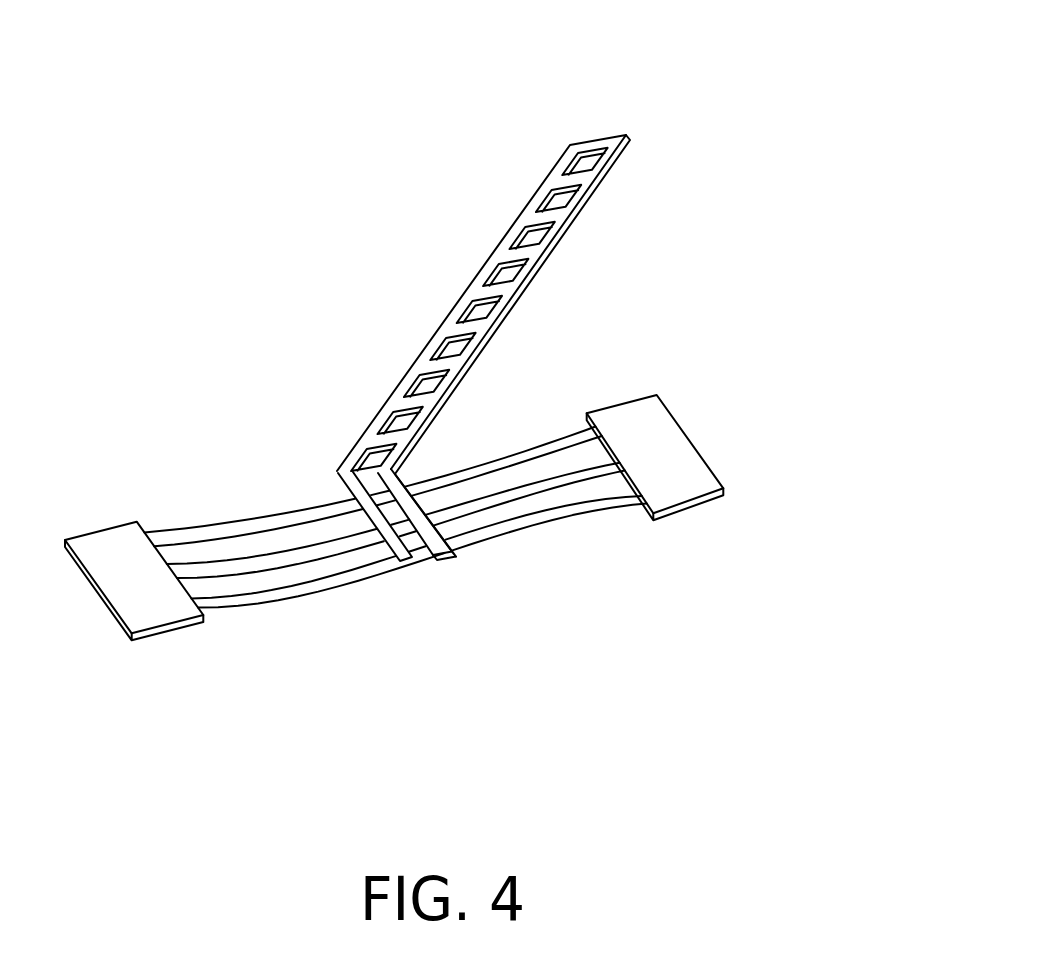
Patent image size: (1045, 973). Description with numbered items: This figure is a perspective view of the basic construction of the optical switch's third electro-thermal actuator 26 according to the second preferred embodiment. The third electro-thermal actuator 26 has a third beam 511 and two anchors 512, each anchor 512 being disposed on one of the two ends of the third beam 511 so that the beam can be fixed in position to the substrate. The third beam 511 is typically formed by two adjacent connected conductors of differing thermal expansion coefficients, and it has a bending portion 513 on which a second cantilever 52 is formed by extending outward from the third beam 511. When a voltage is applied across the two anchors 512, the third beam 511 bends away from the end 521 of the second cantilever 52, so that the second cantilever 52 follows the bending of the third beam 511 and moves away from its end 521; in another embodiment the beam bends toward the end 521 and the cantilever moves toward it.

The third electro-thermal actuator 26 is at (797, 190).
The second cantilever 52 is at (473, 293).
The end of the second cantilever 521 is at (597, 133).
The bending portion 513 is at (345, 495).
The third beam 511 is at (332, 545).
The anchors 512 is at (165, 628).